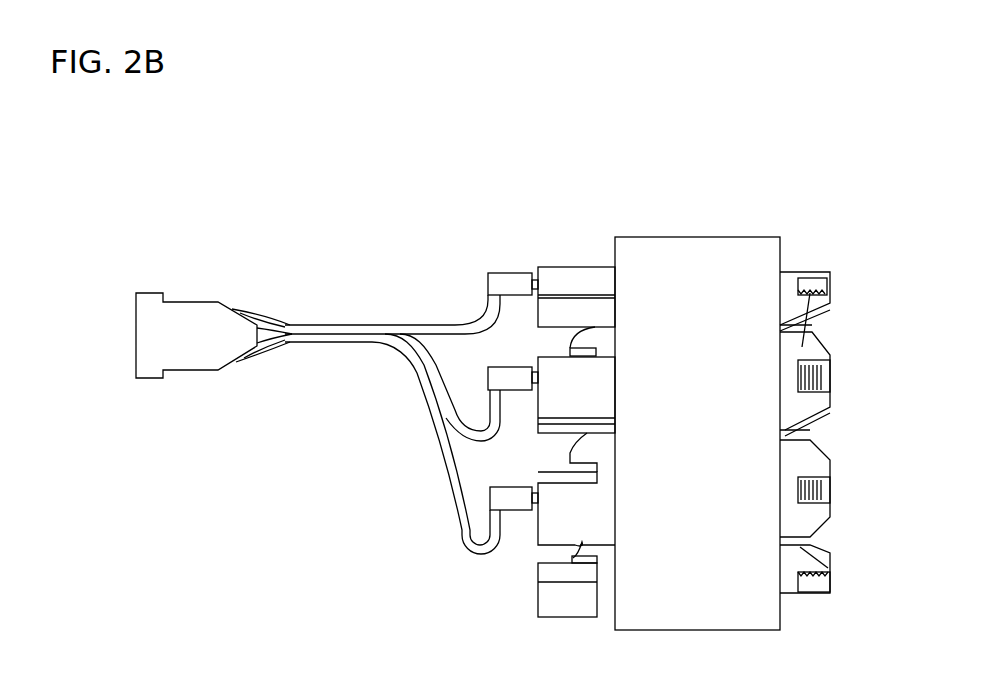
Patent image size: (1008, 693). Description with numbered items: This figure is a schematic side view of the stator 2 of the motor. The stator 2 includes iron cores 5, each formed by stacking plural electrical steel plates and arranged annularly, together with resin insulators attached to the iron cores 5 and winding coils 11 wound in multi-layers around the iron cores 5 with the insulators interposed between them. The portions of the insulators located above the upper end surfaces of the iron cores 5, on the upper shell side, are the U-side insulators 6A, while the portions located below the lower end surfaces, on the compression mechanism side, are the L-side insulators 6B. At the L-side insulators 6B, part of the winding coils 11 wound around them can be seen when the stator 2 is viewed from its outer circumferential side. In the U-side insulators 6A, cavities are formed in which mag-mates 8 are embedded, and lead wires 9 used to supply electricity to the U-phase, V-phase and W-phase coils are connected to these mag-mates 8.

The stator 2 is at (436, 284).
The iron core 5 is at (715, 285).
The U-side insulator 6A is at (588, 337).
The L-side insulator 6B is at (808, 293).
The mag-mate 8 is at (540, 505).
The lead wire 9 is at (455, 487).
The winding coil 11 is at (820, 371).